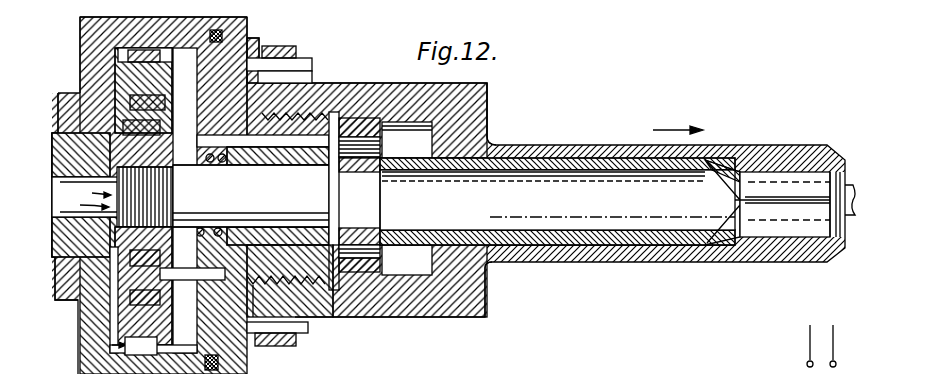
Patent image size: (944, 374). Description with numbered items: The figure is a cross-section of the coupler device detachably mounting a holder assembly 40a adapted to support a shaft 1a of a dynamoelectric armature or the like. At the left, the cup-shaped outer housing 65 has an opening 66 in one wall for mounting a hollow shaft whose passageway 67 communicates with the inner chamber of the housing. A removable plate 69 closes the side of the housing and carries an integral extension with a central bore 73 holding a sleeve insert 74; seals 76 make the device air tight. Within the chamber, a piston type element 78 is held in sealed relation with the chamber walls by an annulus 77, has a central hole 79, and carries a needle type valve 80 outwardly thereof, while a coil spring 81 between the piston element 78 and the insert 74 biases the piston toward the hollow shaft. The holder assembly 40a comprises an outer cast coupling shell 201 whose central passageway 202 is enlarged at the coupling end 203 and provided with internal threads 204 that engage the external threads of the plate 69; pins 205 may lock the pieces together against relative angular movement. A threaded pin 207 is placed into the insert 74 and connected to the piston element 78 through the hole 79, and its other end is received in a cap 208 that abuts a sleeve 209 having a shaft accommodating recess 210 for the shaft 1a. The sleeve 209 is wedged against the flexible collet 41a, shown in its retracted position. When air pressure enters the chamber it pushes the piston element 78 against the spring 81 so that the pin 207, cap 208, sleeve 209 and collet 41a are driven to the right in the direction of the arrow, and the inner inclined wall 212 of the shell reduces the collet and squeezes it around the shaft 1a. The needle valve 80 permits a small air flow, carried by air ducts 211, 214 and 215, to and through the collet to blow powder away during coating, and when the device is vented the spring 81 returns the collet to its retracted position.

The outer housing 65 is at (93, 44).
The opening 66 is at (88, 233).
The passageway 67 is at (67, 182).
The removable plate 69 is at (268, 46).
The central bore 73 is at (292, 244).
The sleeve insert 74 is at (292, 165).
The seals 76 is at (224, 35).
The annulus 77 is at (122, 58).
The piston type element 78 is at (152, 80).
The hole 79 is at (85, 197).
The needle type valve 80 is at (160, 136).
The coil spring 81 is at (208, 226).
The outer cast coupling shell 201 is at (567, 145).
The central passageway 202 is at (412, 273).
The coupling end 203 is at (337, 300).
The internal threads 204 is at (310, 107).
The pins 205 is at (305, 66).
The threaded pin 207 is at (360, 197).
The cap 208 is at (367, 268).
The sleeve 209 is at (523, 243).
The shaft accommodating recess 210 is at (612, 232).
The air duct 211 is at (275, 140).
The inner inclined wall 212 is at (741, 160).
The air duct 214 is at (358, 145).
The air duct 215 is at (402, 165).
The shaft 1a is at (570, 222).
The holder assembly 40a is at (489, 116).
The collet 41a is at (788, 186).